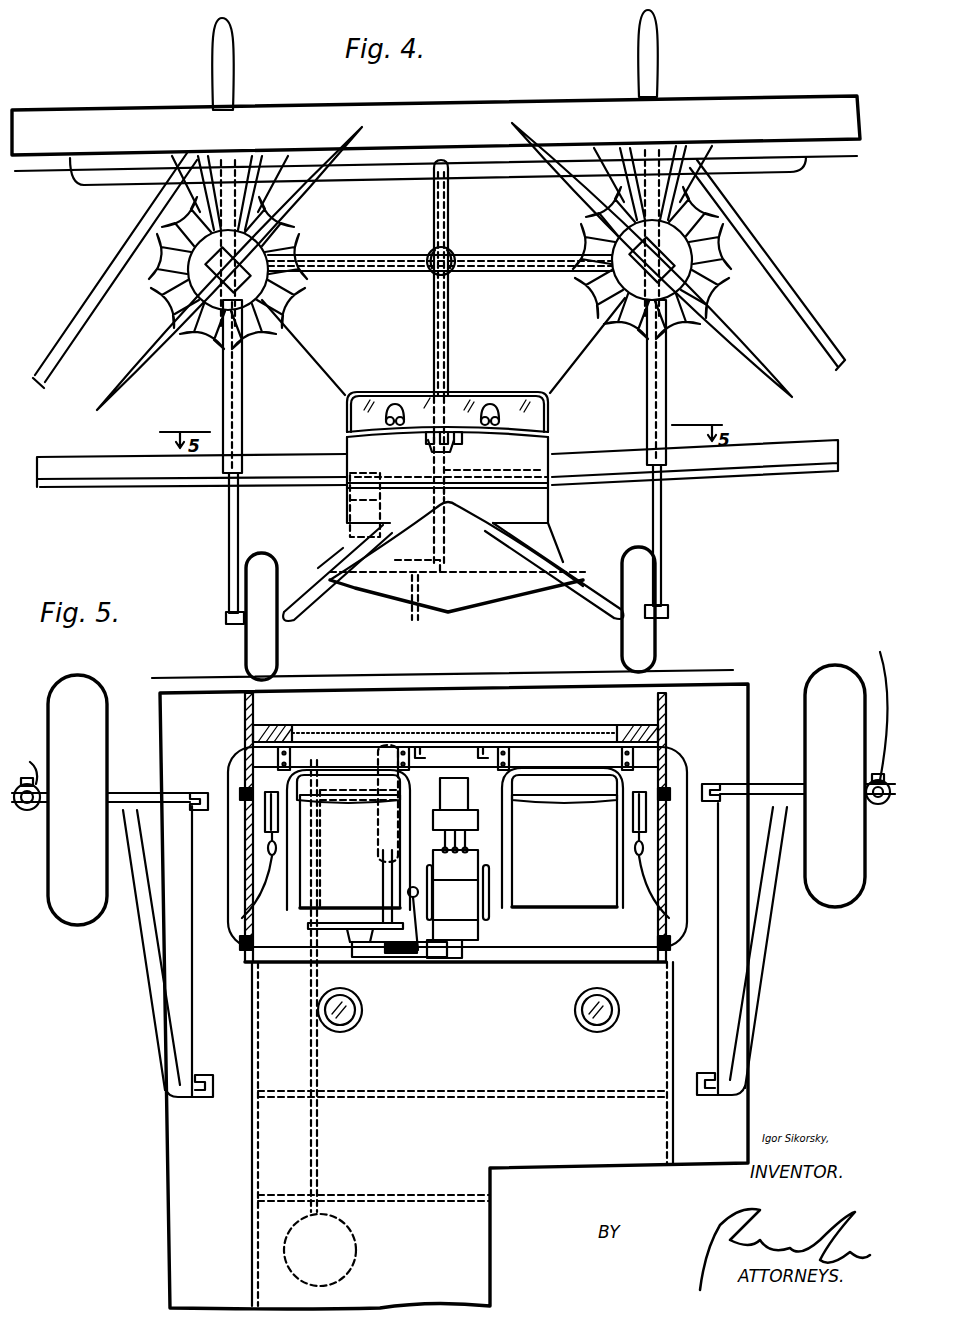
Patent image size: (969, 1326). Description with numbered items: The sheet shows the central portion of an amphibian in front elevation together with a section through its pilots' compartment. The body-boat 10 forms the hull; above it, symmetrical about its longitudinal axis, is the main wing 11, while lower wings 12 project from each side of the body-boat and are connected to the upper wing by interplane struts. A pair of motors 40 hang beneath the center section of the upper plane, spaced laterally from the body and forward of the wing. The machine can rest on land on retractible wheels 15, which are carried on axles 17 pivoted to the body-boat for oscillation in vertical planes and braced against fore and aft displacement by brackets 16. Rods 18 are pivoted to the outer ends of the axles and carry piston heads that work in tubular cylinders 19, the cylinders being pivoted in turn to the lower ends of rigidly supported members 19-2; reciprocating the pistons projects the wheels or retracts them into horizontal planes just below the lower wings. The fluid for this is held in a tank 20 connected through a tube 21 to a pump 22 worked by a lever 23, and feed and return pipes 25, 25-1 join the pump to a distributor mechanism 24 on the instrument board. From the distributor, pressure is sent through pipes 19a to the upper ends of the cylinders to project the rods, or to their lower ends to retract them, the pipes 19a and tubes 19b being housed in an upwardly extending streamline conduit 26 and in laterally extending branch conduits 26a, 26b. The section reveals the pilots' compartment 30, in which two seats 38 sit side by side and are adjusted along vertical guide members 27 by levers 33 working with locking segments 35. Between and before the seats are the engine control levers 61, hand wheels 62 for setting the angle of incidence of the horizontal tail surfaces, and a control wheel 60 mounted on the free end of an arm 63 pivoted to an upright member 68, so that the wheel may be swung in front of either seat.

In FIG. 4, the body-boat 10 is at (396, 596).
In FIG. 5, the body-boat 10 is at (186, 1258).
In FIG. 4, the main wing 11 is at (78, 120).
In FIG. 4, the lower wings 12 is at (74, 458).
In FIG. 4, the retractible wheels 15 is at (268, 660).
In FIG. 5, the retractible wheels 15 is at (90, 700).
In FIG. 4, the brackets 16 is at (294, 620).
In FIG. 5, the brackets 16 is at (146, 950).
In FIG. 4, the axles 17 is at (226, 620).
In FIG. 5, the axles 17 is at (36, 840).
In FIG. 4, the rods 18 is at (229, 556).
In FIG. 5, the rods 18 is at (27, 810).
In FIG. 4, the tubular guides or cylinders 19 is at (242, 412).
In FIG. 5, the tubular guides or cylinders 19 is at (449, 712).
In FIG. 4, the rigidly supported members 19-2 is at (228, 165).
In FIG. 4, the pipes 19a is at (345, 256).
In FIG. 4, the tubes 19b is at (352, 272).
In FIG. 4, the tank 20 is at (348, 508).
In FIG. 5, the tank 20 is at (358, 1252).
In FIG. 4, the tube 21 is at (340, 550).
In FIG. 5, the tube 21 is at (311, 1140).
In FIG. 4, the pump 22 is at (418, 612).
In FIG. 5, the pump 22 is at (378, 838).
In FIG. 4, the lever 23 is at (432, 542).
In FIG. 5, the lever 23 is at (418, 955).
In FIG. 4, the distributor mechanism 24 is at (470, 442).
In FIG. 4, the feed pipe 25 is at (430, 468).
In FIG. 4, the return pipe 25-1 is at (492, 478).
In FIG. 4, the streamline conduit 26 is at (434, 316).
In FIG. 4, the branch conduit 26a is at (405, 252).
In FIG. 4, the branch conduit 26b is at (485, 252).
In FIG. 5, the vertical guide members 27 is at (278, 775).
In FIG. 5, the pilots' compartment 30 is at (566, 748).
In FIG. 5, the levers 33 is at (262, 870).
In FIG. 5, the locking segments 35 is at (265, 814).
In FIG. 5, the seats 38 is at (300, 905).
In FIG. 4, the motors 40 is at (676, 244).
In FIG. 5, the control wheel 60 is at (322, 927).
In FIG. 5, the engine control levers 61 is at (442, 846).
In FIG. 5, the hand wheels 62 is at (432, 882).
In FIG. 5, the arm 63 is at (366, 944).
In FIG. 5, the upright member 68 is at (452, 956).